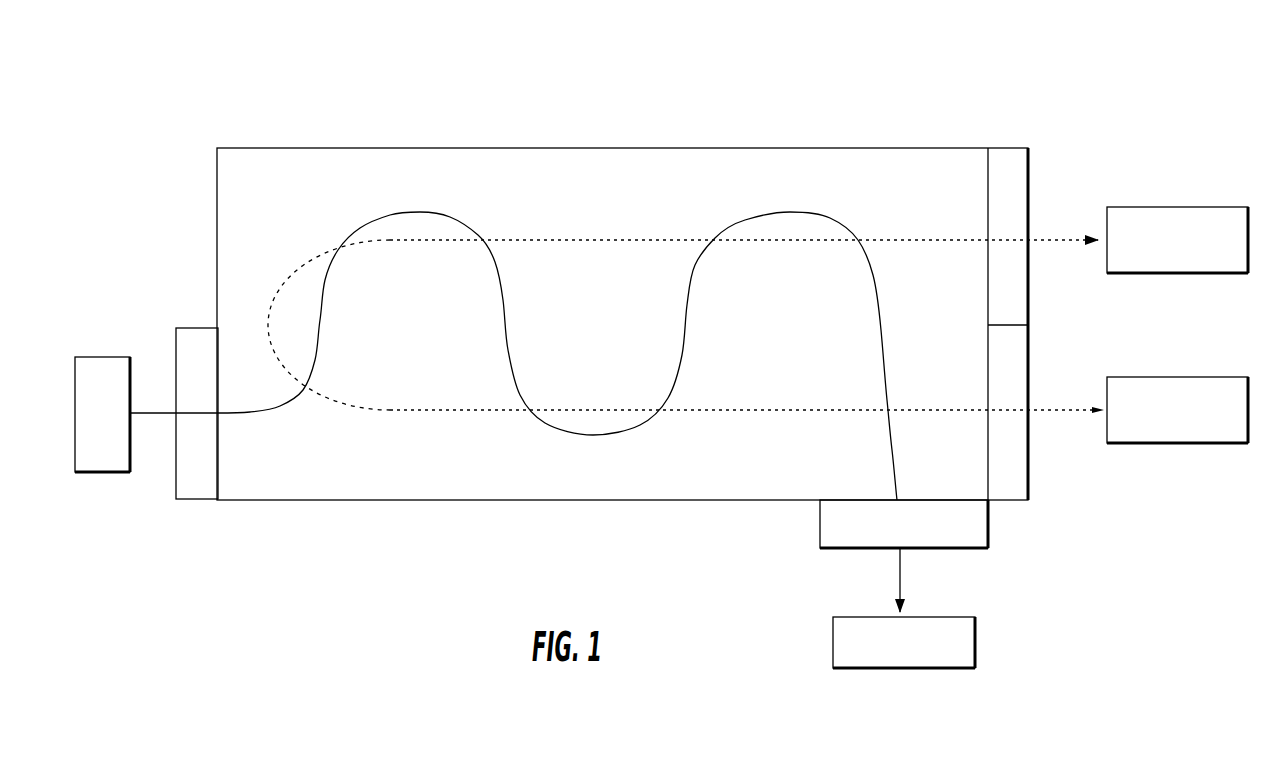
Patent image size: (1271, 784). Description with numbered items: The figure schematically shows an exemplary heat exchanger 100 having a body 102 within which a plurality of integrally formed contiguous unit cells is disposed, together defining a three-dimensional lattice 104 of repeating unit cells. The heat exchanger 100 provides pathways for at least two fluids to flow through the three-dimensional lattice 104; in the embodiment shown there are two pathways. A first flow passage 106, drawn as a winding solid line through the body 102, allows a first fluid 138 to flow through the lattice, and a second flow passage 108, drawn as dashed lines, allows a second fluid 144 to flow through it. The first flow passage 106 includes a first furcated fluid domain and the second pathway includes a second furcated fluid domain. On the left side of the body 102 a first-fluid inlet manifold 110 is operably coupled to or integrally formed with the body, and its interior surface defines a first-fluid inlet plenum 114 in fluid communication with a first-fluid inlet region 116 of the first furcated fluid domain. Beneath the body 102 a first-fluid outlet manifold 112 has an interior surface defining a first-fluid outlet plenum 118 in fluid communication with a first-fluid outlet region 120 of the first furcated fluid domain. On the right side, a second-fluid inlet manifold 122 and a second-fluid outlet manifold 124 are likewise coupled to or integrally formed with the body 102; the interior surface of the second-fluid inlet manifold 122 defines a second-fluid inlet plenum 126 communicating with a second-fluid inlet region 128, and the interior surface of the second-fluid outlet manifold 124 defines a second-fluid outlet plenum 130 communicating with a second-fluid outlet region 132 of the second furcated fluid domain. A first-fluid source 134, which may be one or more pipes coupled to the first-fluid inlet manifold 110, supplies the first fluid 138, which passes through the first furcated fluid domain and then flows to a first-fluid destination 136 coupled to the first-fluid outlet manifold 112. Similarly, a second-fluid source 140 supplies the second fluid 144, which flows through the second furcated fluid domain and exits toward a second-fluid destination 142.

The heat exchanger 100 is at (643, 90).
The body 102 is at (778, 148).
The three-dimensional lattice of repeating unit cells 104 is at (530, 182).
The first flow passage 106 is at (322, 330).
The second flow passage 108 is at (765, 408).
The first-fluid inlet manifold 110 is at (192, 328).
The first-fluid outlet manifold 112 is at (830, 550).
The first-fluid inlet plenum 114 is at (200, 473).
The first-fluid inlet region 116 is at (243, 445).
The first-fluid outlet plenum 118 is at (965, 527).
The first-fluid outlet region 120 is at (862, 477).
The second-fluid inlet manifold 122 is at (1015, 505).
The second-fluid outlet manifold 124 is at (1013, 148).
The second-fluid inlet plenum 126 is at (1005, 388).
The second-fluid inlet region 128 is at (968, 393).
The second-fluid outlet plenum 130 is at (1003, 225).
The second-fluid outlet region 132 is at (962, 213).
The first-fluid source 134 is at (108, 357).
The first-fluid destination 136 is at (975, 635).
The first fluid 138 is at (121, 431).
The second-fluid source 140 is at (1197, 377).
The second-fluid destination 142 is at (1197, 207).
The second fluid 144 is at (1196, 427).